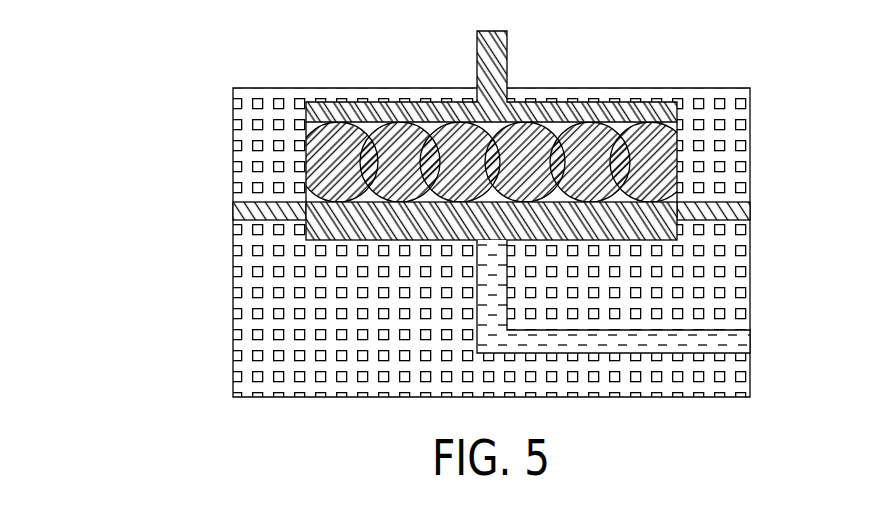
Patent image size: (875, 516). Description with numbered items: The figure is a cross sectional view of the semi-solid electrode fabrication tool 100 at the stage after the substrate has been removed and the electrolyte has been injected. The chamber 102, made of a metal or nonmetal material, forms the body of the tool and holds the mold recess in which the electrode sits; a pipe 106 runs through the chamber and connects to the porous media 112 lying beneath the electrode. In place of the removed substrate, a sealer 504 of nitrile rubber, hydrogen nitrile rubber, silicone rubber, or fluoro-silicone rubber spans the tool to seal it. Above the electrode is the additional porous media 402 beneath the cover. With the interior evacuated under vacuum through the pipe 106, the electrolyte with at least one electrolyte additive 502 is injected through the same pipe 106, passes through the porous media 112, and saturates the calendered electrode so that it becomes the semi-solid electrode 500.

The semi-solid electrode fabrication tool 100 is at (776, 275).
The chamber 102 is at (233, 354).
The pipe 106 is at (750, 343).
The porous media 112 is at (330, 235).
The additional porous media 402 is at (579, 120).
The semi-solid electrode 500 is at (305, 148).
The electrolyte with electrolyte additive 502 is at (361, 120).
The sealer 504 is at (750, 212).